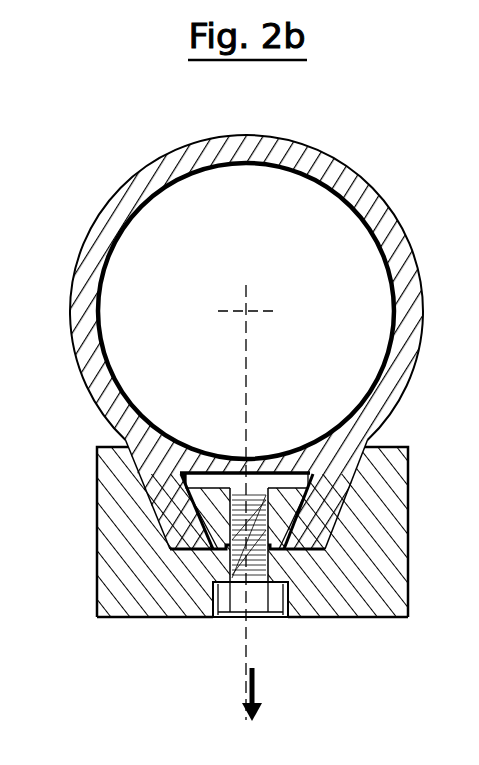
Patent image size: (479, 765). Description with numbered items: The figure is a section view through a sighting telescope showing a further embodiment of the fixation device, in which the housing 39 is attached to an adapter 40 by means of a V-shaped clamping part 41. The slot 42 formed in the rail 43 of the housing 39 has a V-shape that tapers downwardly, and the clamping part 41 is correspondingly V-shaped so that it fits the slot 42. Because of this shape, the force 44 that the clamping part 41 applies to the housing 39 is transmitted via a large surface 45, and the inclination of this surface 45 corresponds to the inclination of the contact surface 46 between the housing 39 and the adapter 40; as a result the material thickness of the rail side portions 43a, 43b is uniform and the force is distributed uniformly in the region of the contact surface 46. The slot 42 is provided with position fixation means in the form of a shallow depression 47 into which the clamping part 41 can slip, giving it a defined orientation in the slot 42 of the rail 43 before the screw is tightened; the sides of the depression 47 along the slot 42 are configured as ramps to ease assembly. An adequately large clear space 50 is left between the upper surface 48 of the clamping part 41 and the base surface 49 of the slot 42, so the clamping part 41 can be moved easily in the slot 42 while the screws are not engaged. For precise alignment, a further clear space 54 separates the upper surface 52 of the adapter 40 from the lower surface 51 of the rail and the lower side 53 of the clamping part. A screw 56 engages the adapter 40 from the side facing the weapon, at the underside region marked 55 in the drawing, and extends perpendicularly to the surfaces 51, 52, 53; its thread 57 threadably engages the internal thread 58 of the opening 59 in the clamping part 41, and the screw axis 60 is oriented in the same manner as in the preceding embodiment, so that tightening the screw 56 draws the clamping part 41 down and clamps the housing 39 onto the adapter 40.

The housing 39 is at (412, 233).
The adapter 40 is at (421, 580).
The clamping part 41 is at (345, 486).
The slot 42 is at (356, 470).
The rail 43 is at (150, 457).
The rail side portion 43a is at (330, 492).
The rail side portion 43b is at (195, 552).
The force 44 is at (260, 692).
The surface 45 is at (300, 510).
The contact surface 46 is at (318, 540).
The shallow depression 47 is at (176, 484).
The upper surface of the clamping part 48 is at (177, 528).
The base surface of the slot 49 is at (179, 473).
The clear space 50 is at (222, 470).
The lower surface of the rail 51 is at (127, 618).
The upper surface of the adapter 52 is at (160, 618).
The lower side of the clamping part 53 is at (182, 618).
The further clear space 54 is at (316, 577).
The block underside 55 is at (377, 620).
The screw 56 is at (230, 618).
The thread 57 is at (265, 592).
The internal thread 58 is at (303, 472).
The opening 59 is at (262, 470).
The screw axis 60 is at (250, 331).